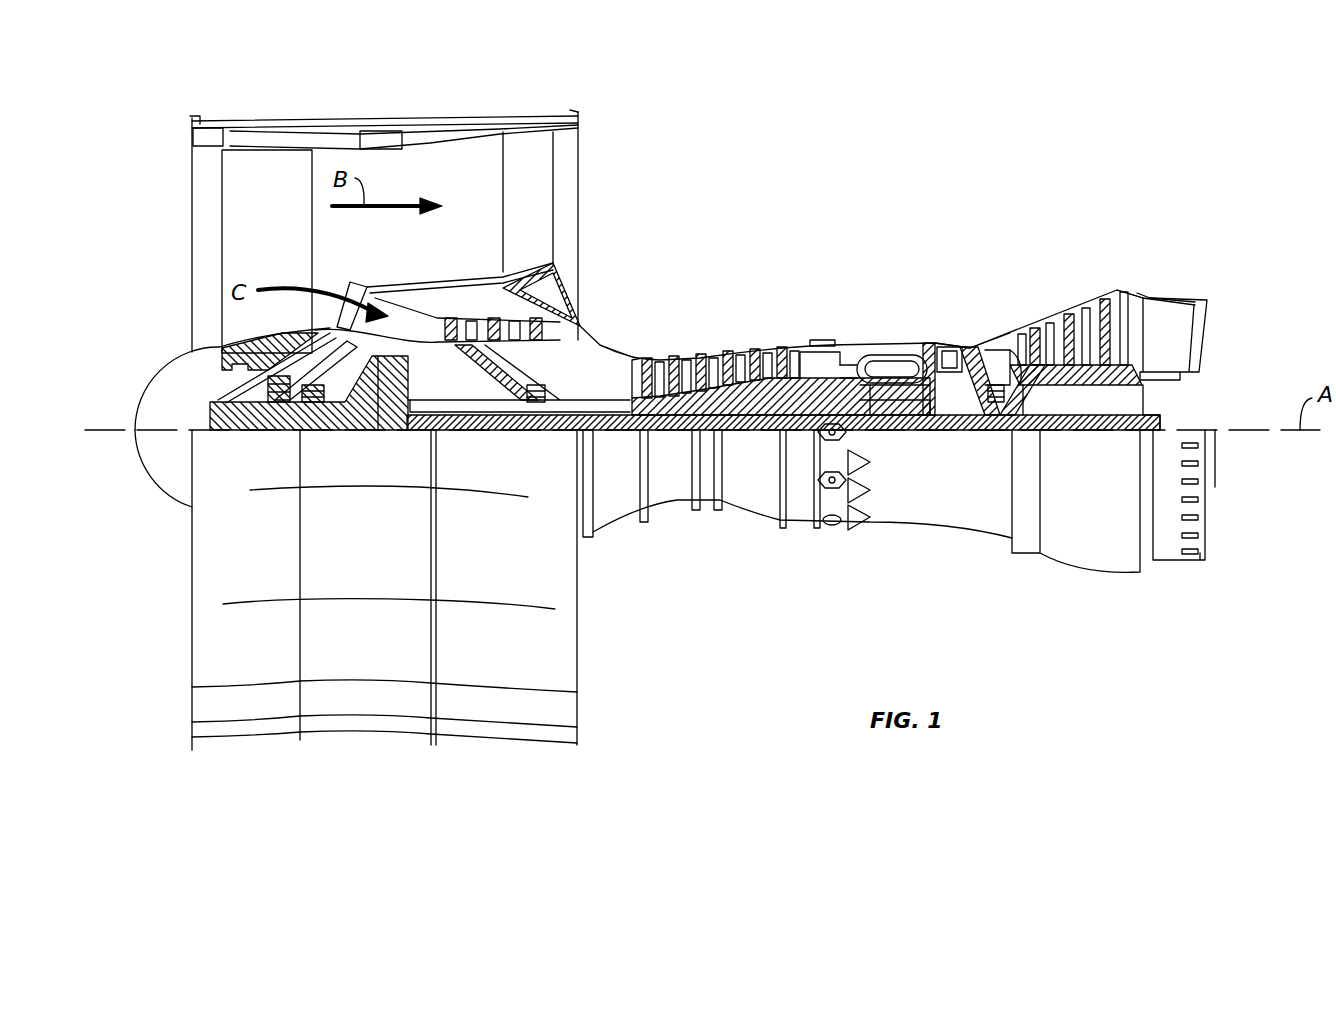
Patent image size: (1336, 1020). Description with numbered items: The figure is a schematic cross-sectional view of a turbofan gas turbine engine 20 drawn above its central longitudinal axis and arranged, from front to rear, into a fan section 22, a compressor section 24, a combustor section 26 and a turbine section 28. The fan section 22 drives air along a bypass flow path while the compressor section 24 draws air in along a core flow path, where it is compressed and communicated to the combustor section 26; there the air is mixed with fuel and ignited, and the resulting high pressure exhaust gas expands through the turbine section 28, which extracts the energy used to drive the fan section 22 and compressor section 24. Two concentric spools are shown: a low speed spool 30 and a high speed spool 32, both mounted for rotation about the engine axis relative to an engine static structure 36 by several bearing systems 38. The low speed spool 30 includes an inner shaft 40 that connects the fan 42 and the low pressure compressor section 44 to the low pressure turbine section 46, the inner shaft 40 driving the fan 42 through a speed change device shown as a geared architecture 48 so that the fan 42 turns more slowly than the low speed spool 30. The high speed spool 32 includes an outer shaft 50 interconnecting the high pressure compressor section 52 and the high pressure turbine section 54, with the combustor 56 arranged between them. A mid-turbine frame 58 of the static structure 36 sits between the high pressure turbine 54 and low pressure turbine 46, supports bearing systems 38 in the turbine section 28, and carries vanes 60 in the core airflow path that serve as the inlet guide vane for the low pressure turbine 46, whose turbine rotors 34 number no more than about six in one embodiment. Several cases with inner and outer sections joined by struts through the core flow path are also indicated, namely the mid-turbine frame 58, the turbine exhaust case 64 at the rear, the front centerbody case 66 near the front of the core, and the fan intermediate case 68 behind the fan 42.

The gas turbine engine 20 is at (886, 188).
The fan section 22 is at (415, 96).
The compressor section 24 is at (862, 240).
The combustor section 26 is at (970, 240).
The turbine section 28 is at (1150, 240).
The low speed spool 30 is at (745, 442).
The high speed spool 32 is at (800, 380).
The turbine rotors 34 is at (1082, 376).
The engine static structure 36 is at (793, 514).
The bearing systems 38 is at (273, 404).
The inner shaft 40 is at (598, 432).
The fan 42 is at (282, 262).
The low pressure compressor section 44 is at (560, 270).
The low pressure turbine section 46 is at (1085, 300).
The geared architecture 48 is at (395, 415).
The outer shaft 50 is at (882, 406).
The high pressure compressor section 52 is at (727, 396).
The high pressure turbine section 54 is at (945, 342).
The combustor 56 is at (878, 366).
The mid-turbine frame 58 is at (1005, 322).
The vanes 60 is at (1012, 358).
The turbine exhaust case 64 is at (1175, 296).
The front centerbody case 66 is at (598, 325).
The fan intermediate case 68 is at (371, 270).